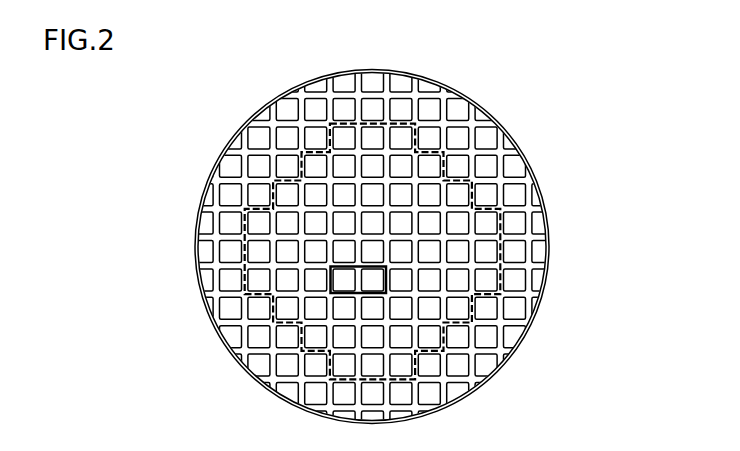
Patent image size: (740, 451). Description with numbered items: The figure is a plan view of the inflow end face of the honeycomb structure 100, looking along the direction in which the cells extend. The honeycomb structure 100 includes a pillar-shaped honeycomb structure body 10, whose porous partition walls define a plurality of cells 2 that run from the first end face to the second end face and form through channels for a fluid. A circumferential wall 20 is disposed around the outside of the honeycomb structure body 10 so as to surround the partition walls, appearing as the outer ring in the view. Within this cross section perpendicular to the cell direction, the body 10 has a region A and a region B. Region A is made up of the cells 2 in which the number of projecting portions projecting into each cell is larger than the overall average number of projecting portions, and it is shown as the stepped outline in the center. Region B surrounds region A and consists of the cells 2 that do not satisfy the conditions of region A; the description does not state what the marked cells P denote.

The honeycomb structure 100 is at (410, 231).
The honeycomb structure body 10 is at (495, 375).
The circumferential wall 20 is at (533, 322).
The cells 2 is at (519, 280).
The region A is at (380, 234).
The region B is at (400, 251).
The chip pair P is at (330, 281).